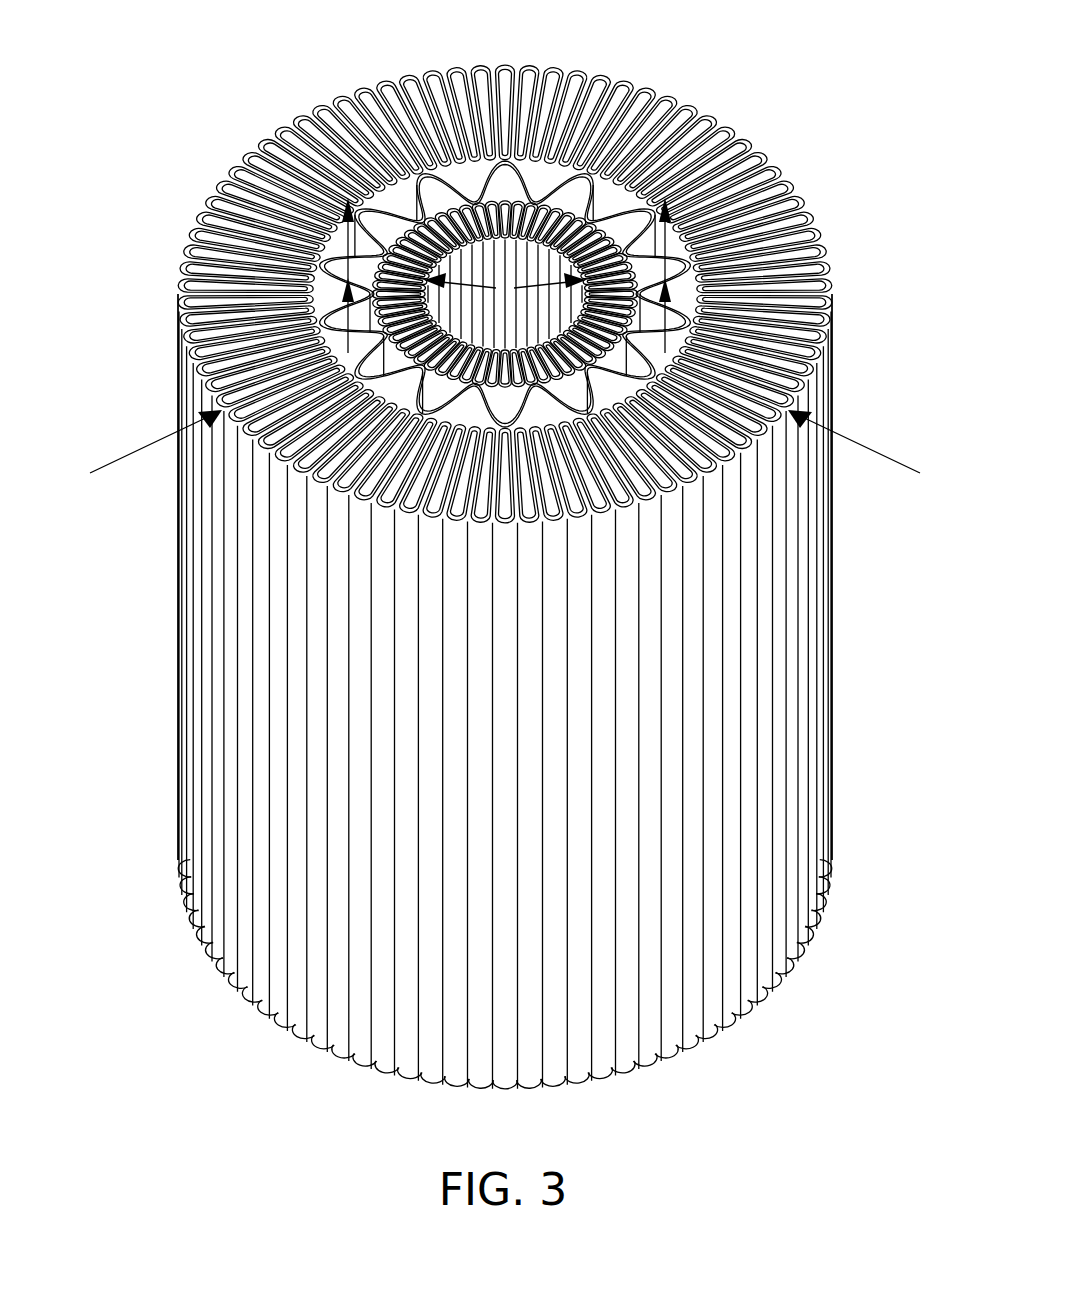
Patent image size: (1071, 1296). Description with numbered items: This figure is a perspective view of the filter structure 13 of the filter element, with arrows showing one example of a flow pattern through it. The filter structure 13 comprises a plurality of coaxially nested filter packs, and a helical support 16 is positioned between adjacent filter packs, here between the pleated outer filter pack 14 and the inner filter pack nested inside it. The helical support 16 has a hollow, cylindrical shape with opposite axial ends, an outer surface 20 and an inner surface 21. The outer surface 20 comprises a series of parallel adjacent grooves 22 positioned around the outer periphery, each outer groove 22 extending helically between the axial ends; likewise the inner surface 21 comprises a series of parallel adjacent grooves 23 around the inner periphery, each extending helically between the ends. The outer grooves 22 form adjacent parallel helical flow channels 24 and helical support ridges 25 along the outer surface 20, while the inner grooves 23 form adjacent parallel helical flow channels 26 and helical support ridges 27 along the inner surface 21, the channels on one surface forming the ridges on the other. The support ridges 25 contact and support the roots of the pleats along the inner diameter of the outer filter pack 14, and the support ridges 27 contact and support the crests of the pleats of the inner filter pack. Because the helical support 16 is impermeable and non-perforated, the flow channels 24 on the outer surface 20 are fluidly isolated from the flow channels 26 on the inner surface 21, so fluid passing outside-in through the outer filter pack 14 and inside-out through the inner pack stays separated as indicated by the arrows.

The filter structure 13 is at (776, 604).
The outer filter pack 14 is at (252, 690).
The helical support 16 is at (688, 303).
The outer surface 20 is at (390, 387).
The inner surface 21 is at (692, 262).
The outer grooves 22 is at (325, 291).
The inner grooves 23 is at (325, 320).
The helical flow channels 24 is at (458, 168).
The helical support ridges 25 is at (410, 163).
The helical flow channels 26 is at (585, 180).
The helical support ridges 27 is at (472, 185).